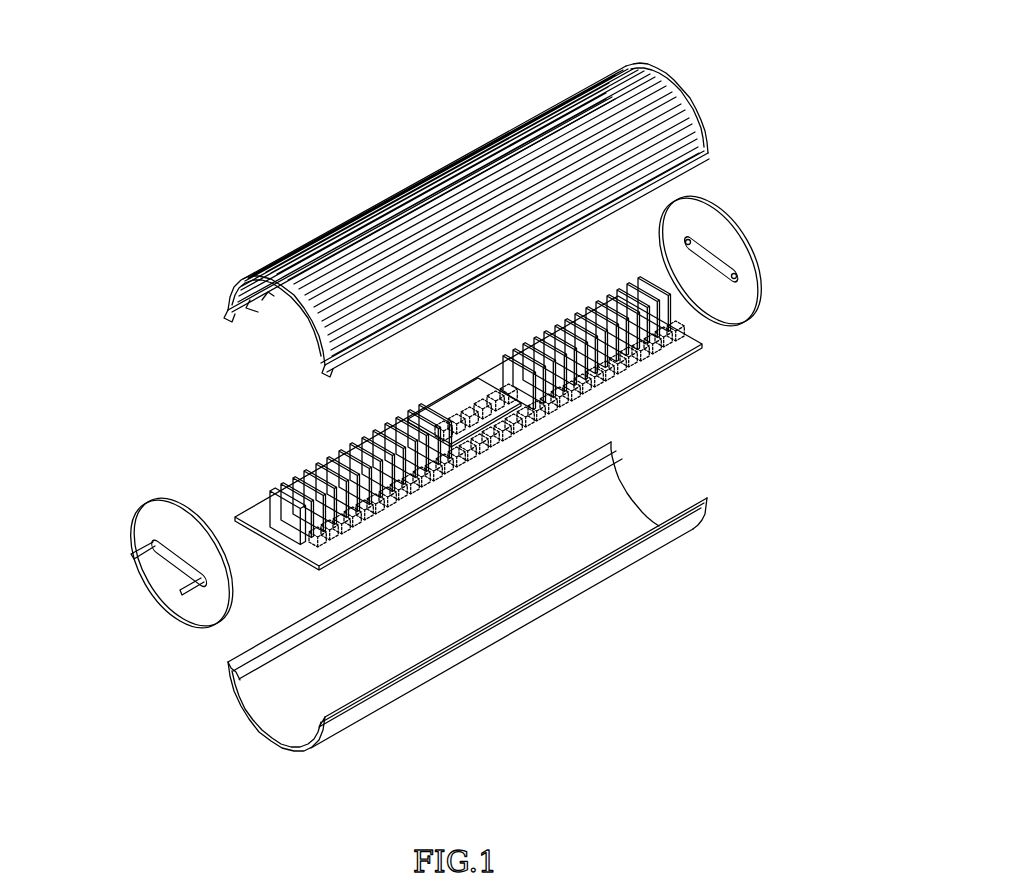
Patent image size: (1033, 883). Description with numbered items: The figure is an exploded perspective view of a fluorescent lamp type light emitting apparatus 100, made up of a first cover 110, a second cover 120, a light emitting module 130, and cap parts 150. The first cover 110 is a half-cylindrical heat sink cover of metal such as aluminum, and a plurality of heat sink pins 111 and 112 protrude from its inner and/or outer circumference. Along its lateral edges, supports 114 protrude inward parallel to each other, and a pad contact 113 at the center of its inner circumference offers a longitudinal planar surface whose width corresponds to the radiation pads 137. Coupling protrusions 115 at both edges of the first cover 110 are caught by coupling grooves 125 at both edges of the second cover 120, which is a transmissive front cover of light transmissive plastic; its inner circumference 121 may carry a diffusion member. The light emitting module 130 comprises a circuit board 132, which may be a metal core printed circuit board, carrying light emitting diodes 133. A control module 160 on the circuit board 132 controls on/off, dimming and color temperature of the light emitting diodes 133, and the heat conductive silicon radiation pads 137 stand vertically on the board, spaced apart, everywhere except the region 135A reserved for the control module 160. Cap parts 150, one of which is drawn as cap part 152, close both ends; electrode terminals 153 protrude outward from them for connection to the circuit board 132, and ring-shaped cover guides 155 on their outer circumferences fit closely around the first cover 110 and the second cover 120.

The light emitting apparatus 100 is at (254, 90).
The first cover 110 is at (674, 82).
The heat sink pins 111 is at (333, 257).
The heat sink pins 112 is at (250, 300).
The pad contact 113 is at (263, 300).
The supports 114 is at (276, 320).
The coupling protrusions 115 is at (233, 320).
The second cover 120 is at (674, 540).
The inner circumference 121 is at (285, 716).
The coupling grooves 125 is at (708, 496).
The light emitting module 130 is at (247, 591).
The circuit board 132 is at (305, 547).
The light emitting diodes 133 is at (270, 528).
The region for the control module 135A is at (435, 391).
The radiation pads 137 is at (291, 486).
The cap parts 150 is at (143, 532).
The second end cap 152 is at (773, 288).
The electrode terminals 153 is at (128, 568).
The cover guides 155 is at (178, 511).
The control module 160 is at (467, 391).